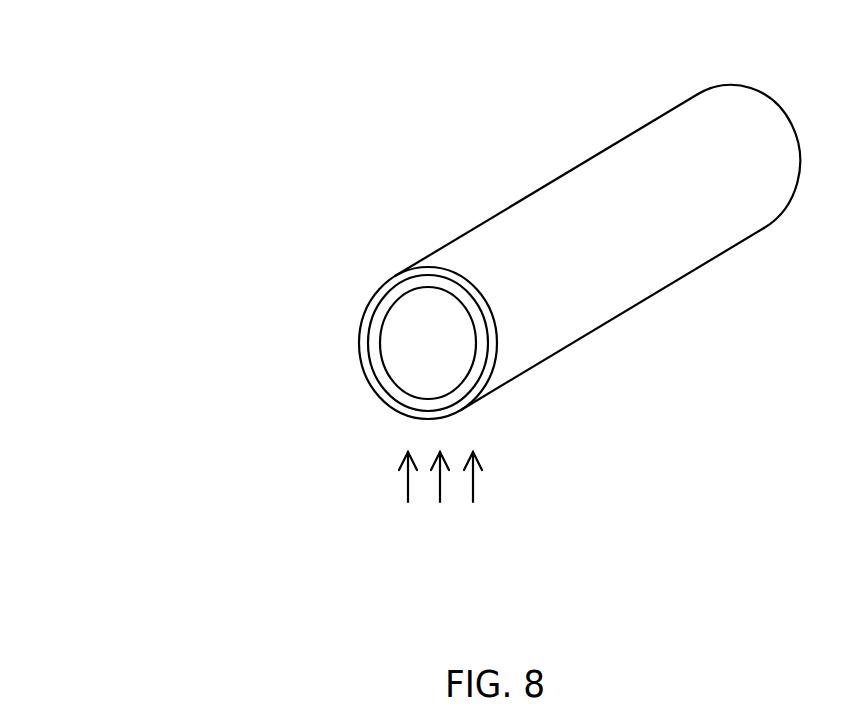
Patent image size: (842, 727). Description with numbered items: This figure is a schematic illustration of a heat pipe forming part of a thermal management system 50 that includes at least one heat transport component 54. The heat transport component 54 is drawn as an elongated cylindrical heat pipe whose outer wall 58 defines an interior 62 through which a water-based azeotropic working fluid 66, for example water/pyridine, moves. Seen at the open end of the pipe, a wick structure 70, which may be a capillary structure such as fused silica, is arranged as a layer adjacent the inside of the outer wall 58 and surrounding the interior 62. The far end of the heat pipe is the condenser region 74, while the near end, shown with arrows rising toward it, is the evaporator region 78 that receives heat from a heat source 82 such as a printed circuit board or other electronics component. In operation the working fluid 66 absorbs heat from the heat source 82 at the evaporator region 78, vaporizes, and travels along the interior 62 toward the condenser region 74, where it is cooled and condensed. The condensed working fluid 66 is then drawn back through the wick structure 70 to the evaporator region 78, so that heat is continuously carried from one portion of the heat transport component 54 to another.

The thermal management system 50 is at (170, 107).
The heat transport component 54 is at (635, 135).
The outer wall 58 is at (558, 202).
The interior 62 is at (411, 365).
The water-based azeotropic working fluid 66 is at (425, 320).
The wick structure 70 is at (483, 350).
The condenser region 74 is at (770, 207).
The evaporator region 78 is at (495, 378).
The heat source 82 is at (450, 549).